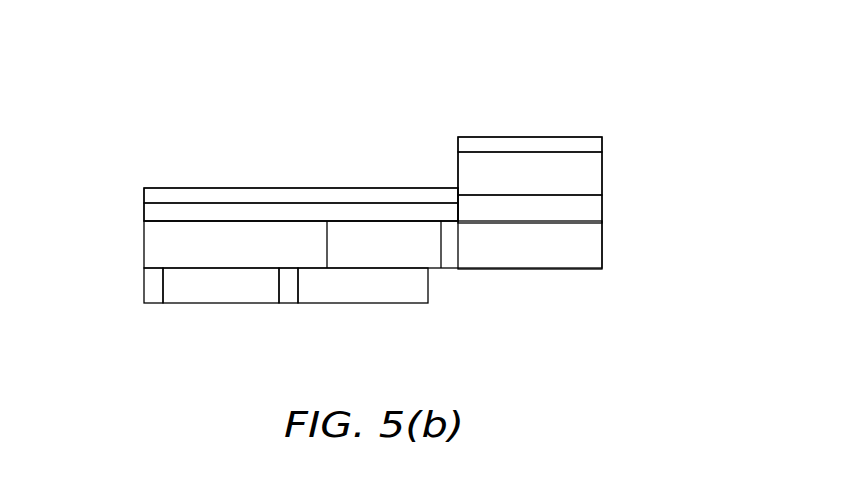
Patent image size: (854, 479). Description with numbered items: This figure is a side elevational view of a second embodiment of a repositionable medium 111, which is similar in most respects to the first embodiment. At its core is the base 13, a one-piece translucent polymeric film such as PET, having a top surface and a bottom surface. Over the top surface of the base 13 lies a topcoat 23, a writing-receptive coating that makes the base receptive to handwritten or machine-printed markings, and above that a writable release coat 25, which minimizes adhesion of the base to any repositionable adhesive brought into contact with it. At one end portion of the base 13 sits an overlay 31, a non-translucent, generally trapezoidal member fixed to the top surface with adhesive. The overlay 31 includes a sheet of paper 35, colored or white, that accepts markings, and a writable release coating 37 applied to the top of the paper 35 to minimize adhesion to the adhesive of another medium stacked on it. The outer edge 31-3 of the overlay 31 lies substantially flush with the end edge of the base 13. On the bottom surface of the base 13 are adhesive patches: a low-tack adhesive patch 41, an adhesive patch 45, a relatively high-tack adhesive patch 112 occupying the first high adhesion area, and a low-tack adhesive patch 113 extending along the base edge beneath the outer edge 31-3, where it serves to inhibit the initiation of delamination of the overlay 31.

The base 13 is at (130, 246).
The repositionable medium 111 is at (323, 143).
The writable release coat 25 is at (242, 195).
The topcoat 23 is at (177, 212).
The overlay 31 is at (445, 145).
The writable release coating 37 is at (531, 138).
The outer edge 31-3 is at (602, 158).
The sheet of paper 35 is at (575, 172).
The adhesive patch 113 is at (154, 290).
The adhesive patch 112 is at (220, 287).
The adhesive patch 41 is at (288, 292).
The adhesive patch 45 is at (393, 290).